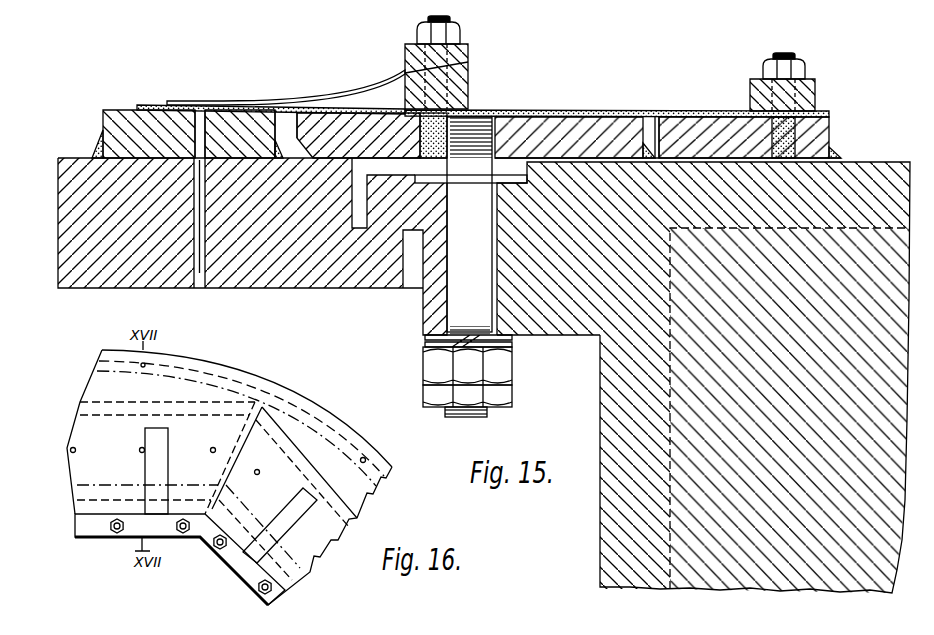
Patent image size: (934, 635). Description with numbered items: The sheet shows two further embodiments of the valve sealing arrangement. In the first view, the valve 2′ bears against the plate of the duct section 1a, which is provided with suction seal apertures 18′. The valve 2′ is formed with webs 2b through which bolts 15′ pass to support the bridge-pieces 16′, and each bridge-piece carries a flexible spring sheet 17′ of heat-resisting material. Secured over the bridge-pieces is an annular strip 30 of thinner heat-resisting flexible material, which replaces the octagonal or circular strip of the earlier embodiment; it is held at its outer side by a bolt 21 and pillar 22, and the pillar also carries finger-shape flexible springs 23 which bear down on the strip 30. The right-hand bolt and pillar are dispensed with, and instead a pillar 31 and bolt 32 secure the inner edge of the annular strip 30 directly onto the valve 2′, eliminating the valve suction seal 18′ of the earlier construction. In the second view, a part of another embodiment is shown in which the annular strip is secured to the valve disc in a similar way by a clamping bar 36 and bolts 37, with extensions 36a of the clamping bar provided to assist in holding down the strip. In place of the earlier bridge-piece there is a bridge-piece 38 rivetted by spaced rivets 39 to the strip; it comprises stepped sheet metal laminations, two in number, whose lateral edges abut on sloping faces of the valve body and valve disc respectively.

In FIG. 15, the duct section 1a is at (108, 272).
In FIG. 15, the suction seal apertures 18′ is at (198, 273).
In FIG. 15, the flexible spring sheet 17′ is at (289, 107).
In FIG. 15, the bridge-piece 16′ is at (575, 130).
In FIG. 15, the annular strip 30 is at (360, 103).
In FIG. 15, the finger-shape flexible springs 23 is at (384, 82).
In FIG. 15, the pillar 22 is at (469, 58).
In FIG. 15, the bolt 21 is at (417, 34).
In FIG. 15, the pillar 31 is at (815, 99).
In FIG. 15, the bolt 32 is at (797, 58).
In FIG. 15, the bolt 15′ is at (455, 300).
In FIG. 15, the web 2b is at (571, 330).
In FIG. 15, the valve 2′ is at (607, 526).
In FIG. 16, the bridge-piece 38 is at (262, 377).
In FIG. 16, the clamping bar 36 is at (228, 553).
In FIG. 16, the bolts 37 is at (117, 533).
In FIG. 16, the extensions of the clamping bar 36a is at (169, 447).
In FIG. 16, the rivets 39 is at (139, 450).